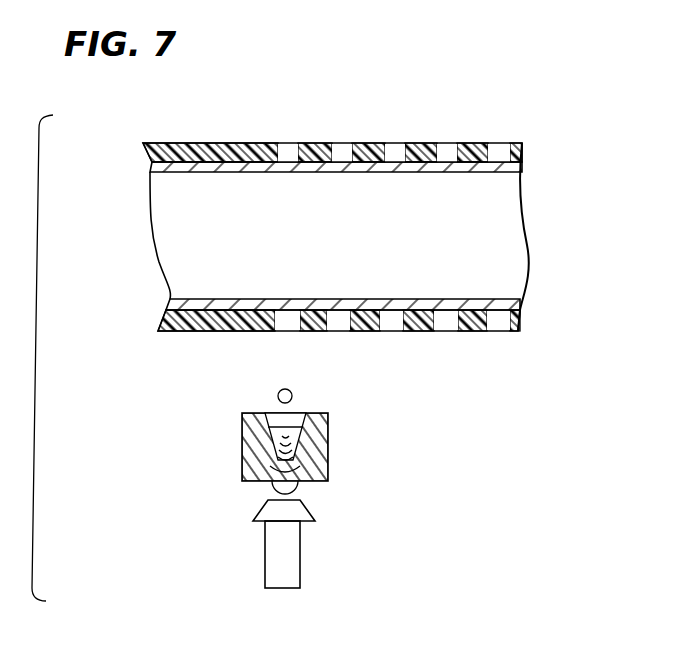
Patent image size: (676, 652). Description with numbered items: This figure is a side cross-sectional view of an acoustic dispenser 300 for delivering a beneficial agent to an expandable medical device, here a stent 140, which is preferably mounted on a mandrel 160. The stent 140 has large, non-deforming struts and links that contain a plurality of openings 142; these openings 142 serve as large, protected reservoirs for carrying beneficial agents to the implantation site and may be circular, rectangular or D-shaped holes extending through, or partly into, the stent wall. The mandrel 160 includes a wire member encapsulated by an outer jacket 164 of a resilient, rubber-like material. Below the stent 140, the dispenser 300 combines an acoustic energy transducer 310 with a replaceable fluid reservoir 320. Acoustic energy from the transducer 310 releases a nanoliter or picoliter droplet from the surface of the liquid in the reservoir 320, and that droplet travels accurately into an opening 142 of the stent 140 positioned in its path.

The stent 140 is at (418, 146).
The openings 142 is at (293, 152).
The mandrel 160 is at (345, 244).
The outer jacket 164 is at (522, 166).
The dispenser 300 is at (372, 488).
The acoustic energy transducer 310 is at (300, 562).
The replaceable fluid reservoir 320 is at (328, 455).